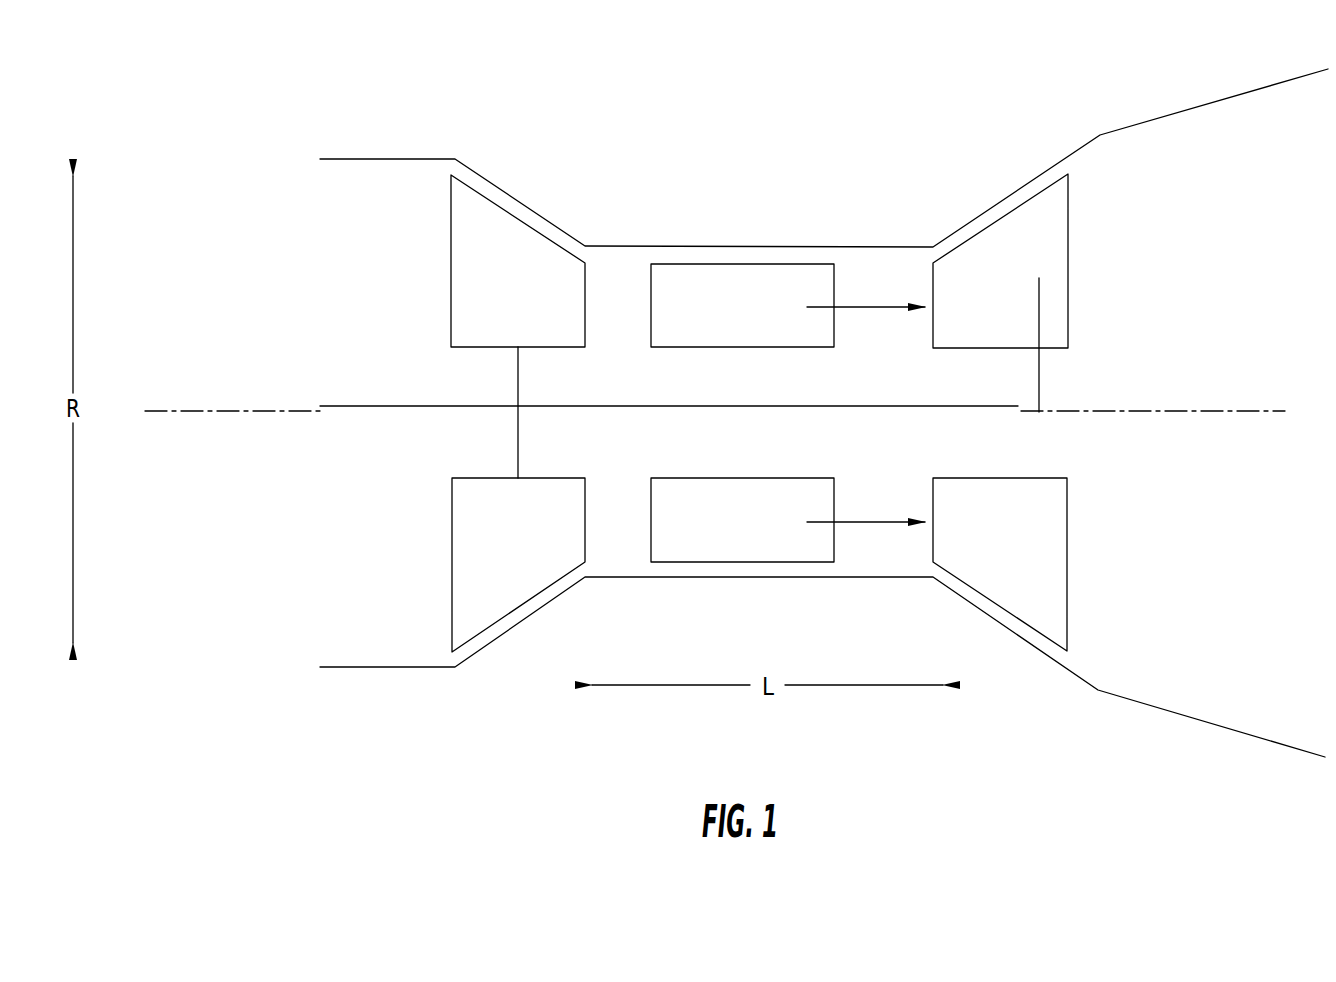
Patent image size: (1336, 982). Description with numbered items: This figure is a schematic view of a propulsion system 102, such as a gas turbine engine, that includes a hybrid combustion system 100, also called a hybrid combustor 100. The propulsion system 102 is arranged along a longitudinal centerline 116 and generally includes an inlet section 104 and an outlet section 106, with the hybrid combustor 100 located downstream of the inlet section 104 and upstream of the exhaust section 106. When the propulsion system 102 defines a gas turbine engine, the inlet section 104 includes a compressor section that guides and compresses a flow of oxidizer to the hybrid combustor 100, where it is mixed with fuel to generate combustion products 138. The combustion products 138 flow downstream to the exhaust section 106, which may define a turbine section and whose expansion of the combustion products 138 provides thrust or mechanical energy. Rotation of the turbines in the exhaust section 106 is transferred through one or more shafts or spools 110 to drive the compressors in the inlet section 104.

The hybrid combustion system 100 is at (728, 264).
The propulsion system 102 is at (914, 125).
The inlet section 104 is at (505, 233).
The outlet section 106 is at (1047, 265).
The shaft 110 is at (636, 410).
The longitudinal centerline 116 is at (1153, 412).
The combustion products 138 is at (852, 307).